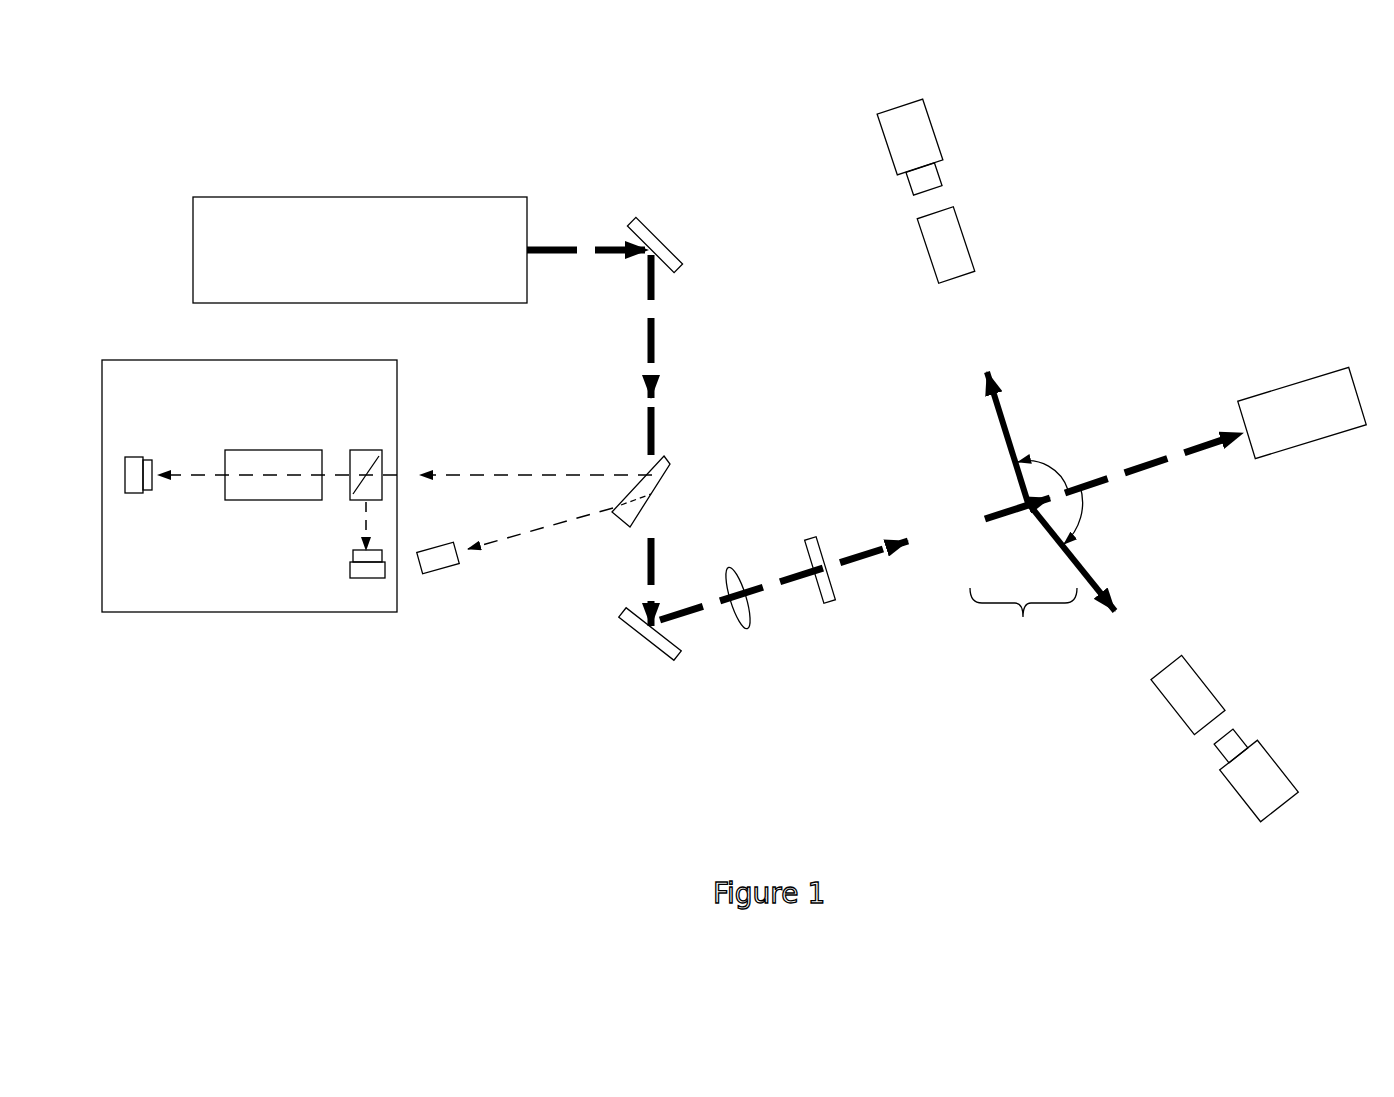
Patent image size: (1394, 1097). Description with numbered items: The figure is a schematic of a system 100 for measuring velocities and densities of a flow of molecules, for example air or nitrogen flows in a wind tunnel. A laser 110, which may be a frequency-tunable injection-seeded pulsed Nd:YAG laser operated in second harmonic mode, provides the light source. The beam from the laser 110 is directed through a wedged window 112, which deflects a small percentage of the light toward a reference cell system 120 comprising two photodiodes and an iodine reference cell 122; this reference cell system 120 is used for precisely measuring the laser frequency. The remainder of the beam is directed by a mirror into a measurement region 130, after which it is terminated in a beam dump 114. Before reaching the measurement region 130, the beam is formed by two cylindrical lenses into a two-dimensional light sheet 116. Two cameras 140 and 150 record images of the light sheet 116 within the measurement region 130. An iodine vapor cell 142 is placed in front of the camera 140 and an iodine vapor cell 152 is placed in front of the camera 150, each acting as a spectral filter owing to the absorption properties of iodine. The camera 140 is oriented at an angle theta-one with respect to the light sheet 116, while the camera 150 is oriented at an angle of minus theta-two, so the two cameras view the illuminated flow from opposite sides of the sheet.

The system 100 is at (486, 104).
The laser 110 is at (318, 197).
The wedged window 112 is at (733, 440).
The beam dump 114 is at (1290, 385).
The light sheet 116 is at (893, 500).
The reference cell system 120 is at (249, 562).
The iodine reference cell 122 is at (275, 448).
The measurement region 130 is at (988, 737).
The camera 140 is at (1280, 767).
The iodine vapor cell 142 is at (1198, 670).
The camera 150 is at (930, 128).
The iodine vapor cell 152 is at (968, 237).